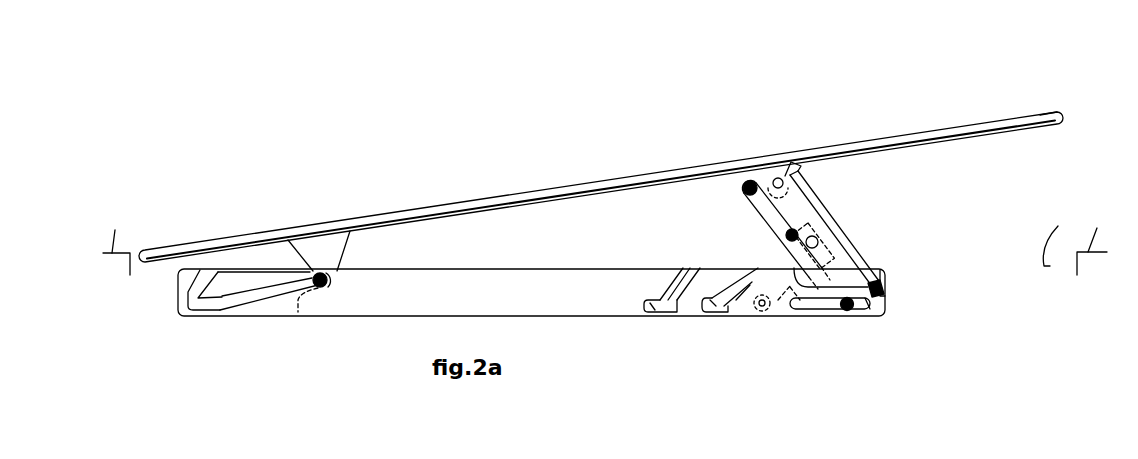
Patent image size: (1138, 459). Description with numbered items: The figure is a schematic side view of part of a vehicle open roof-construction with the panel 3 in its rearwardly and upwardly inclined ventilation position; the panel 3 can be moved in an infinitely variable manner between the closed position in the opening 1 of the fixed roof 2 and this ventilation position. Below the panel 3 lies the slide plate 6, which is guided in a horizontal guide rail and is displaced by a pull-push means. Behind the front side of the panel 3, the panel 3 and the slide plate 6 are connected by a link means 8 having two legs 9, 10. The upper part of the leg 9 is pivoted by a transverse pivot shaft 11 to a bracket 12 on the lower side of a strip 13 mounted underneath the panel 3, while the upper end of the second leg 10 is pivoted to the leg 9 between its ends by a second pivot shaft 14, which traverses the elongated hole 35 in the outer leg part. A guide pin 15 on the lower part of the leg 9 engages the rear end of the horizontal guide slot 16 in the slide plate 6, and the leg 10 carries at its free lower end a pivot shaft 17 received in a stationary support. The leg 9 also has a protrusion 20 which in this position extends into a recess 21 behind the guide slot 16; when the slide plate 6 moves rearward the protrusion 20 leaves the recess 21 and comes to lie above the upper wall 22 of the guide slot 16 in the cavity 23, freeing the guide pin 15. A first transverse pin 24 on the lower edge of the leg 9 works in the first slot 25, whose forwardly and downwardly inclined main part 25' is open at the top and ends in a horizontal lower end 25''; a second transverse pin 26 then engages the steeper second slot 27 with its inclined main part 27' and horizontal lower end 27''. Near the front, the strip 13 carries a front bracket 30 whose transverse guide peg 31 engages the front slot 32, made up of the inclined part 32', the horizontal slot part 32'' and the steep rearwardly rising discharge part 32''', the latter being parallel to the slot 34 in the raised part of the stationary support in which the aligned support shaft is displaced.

The opening 1 is at (1054, 235).
The fixed roof 2 is at (605, 240).
The panel 3 is at (523, 194).
The slide plate 6 is at (598, 300).
The link means 8 is at (824, 207).
The leg 9 is at (811, 191).
The second leg 10 is at (782, 262).
The pivot shaft 11 is at (776, 178).
The bracket 12 is at (789, 166).
The strip 13 is at (1000, 133).
The second pivot shaft 14 is at (840, 241).
The guide pin 15 is at (852, 312).
The guide slot 16 is at (848, 311).
The pivot shaft 17 is at (762, 312).
The protrusion 20 is at (881, 282).
The recess 21 is at (882, 302).
The upper wall 22 is at (840, 290).
The cavity 23 is at (811, 290).
The first transverse pin 24 is at (772, 218).
The first slot 25 is at (723, 320).
The main part 25' is at (735, 329).
The horizontal lower end 25'' is at (679, 336).
The second transverse pin 26 is at (742, 182).
The second slot 27 is at (672, 274).
The main part 27' is at (696, 267).
The horizontal lower end 27'' is at (637, 272).
The front bracket 30 is at (312, 242).
The guide peg 31 is at (322, 273).
The front slot 32 is at (271, 325).
The inclined part 32' is at (265, 322).
The horizontal slot part 32'' is at (215, 322).
The discharge part 32''' is at (187, 321).
The slot 34 is at (310, 302).
The elongated hole 35 is at (820, 240).